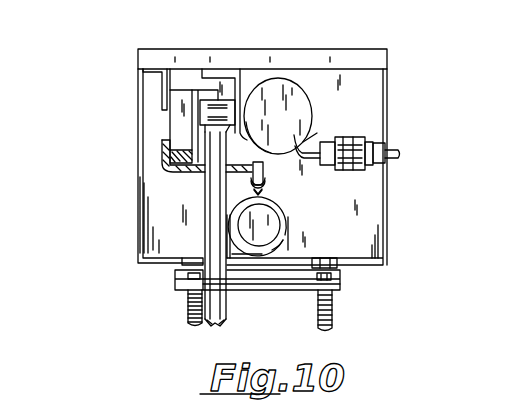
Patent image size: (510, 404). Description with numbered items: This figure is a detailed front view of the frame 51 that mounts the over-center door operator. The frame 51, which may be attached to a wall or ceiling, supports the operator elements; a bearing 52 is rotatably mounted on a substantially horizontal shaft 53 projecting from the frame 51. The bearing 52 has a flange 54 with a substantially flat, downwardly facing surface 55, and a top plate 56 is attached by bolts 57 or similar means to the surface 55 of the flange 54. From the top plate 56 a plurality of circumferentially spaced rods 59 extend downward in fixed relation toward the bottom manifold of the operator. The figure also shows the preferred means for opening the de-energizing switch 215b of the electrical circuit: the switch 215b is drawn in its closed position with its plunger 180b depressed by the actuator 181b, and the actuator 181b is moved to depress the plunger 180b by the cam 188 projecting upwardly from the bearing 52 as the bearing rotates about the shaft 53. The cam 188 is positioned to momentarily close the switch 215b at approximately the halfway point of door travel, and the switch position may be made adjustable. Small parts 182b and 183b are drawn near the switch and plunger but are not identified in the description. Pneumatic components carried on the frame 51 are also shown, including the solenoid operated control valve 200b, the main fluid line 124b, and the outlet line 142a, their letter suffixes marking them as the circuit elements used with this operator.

The frame 51 is at (337, 50).
The solenoid operated control valve 200b is at (277, 76).
The de-energizing switch 215b is at (170, 120).
The top plate 56 is at (258, 292).
The outlet line 142a is at (226, 324).
The plunger 180b is at (162, 160).
The pin 182b is at (252, 166).
The actuator 181b is at (195, 172).
The cam 188 is at (267, 192).
The ring 183b is at (265, 182).
The bearing 52 is at (288, 243).
The shaft 53 is at (280, 227).
The main fluid line 124b is at (317, 133).
The flange 54 is at (342, 273).
The downwardly facing surface 55 is at (308, 281).
The bolts 57 is at (180, 263).
The rods 59 is at (188, 317).